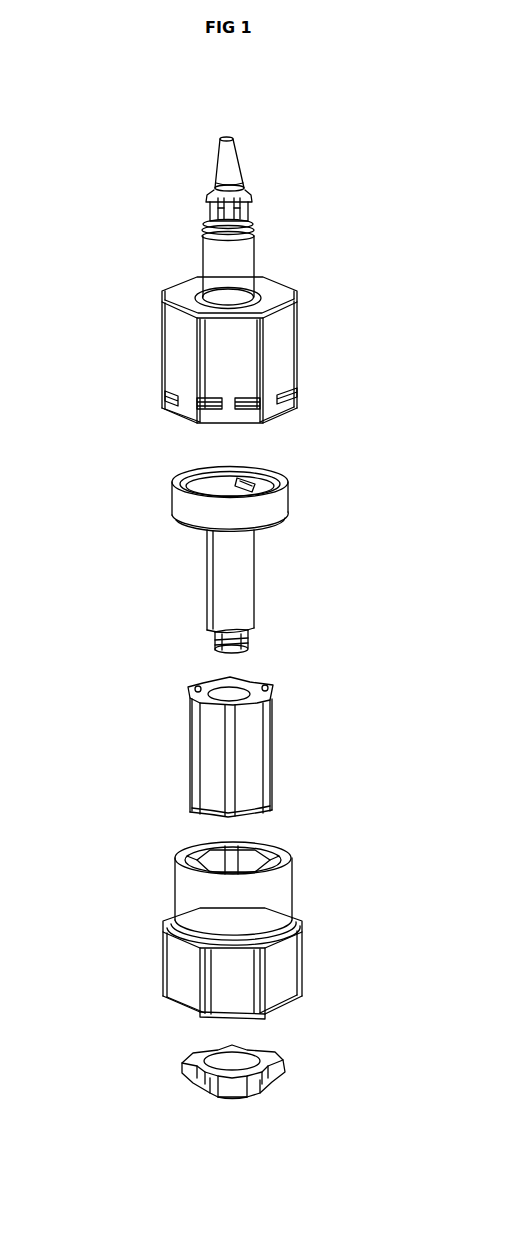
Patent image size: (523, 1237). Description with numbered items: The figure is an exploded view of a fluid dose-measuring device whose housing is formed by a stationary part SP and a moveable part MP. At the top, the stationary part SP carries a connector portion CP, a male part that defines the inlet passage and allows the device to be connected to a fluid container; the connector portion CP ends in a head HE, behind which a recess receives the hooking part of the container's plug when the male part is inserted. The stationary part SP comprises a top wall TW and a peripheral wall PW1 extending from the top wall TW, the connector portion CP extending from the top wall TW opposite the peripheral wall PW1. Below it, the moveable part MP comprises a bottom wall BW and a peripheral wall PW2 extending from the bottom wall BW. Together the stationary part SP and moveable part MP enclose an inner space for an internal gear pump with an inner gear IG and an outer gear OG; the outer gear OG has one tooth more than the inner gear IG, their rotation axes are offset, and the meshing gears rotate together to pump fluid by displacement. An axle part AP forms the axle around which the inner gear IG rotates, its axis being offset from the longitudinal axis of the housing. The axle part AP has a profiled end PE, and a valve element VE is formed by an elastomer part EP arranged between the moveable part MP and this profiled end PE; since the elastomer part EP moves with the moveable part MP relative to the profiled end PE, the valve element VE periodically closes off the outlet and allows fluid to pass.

The head HE is at (227, 167).
The connector portion CP is at (288, 221).
The top wall TW is at (183, 300).
The peripheral wall PW1 is at (183, 358).
The stationary part SP is at (246, 329).
The axle part AP is at (272, 563).
The profiled end PE is at (242, 642).
The inner gear IG is at (255, 742).
The outer gear OG is at (278, 857).
The peripheral wall PW2 is at (177, 965).
The moveable part MP is at (242, 920).
The bottom wall BW is at (195, 1020).
The valve element VE is at (286, 1072).
The elastomer part EP is at (273, 1073).